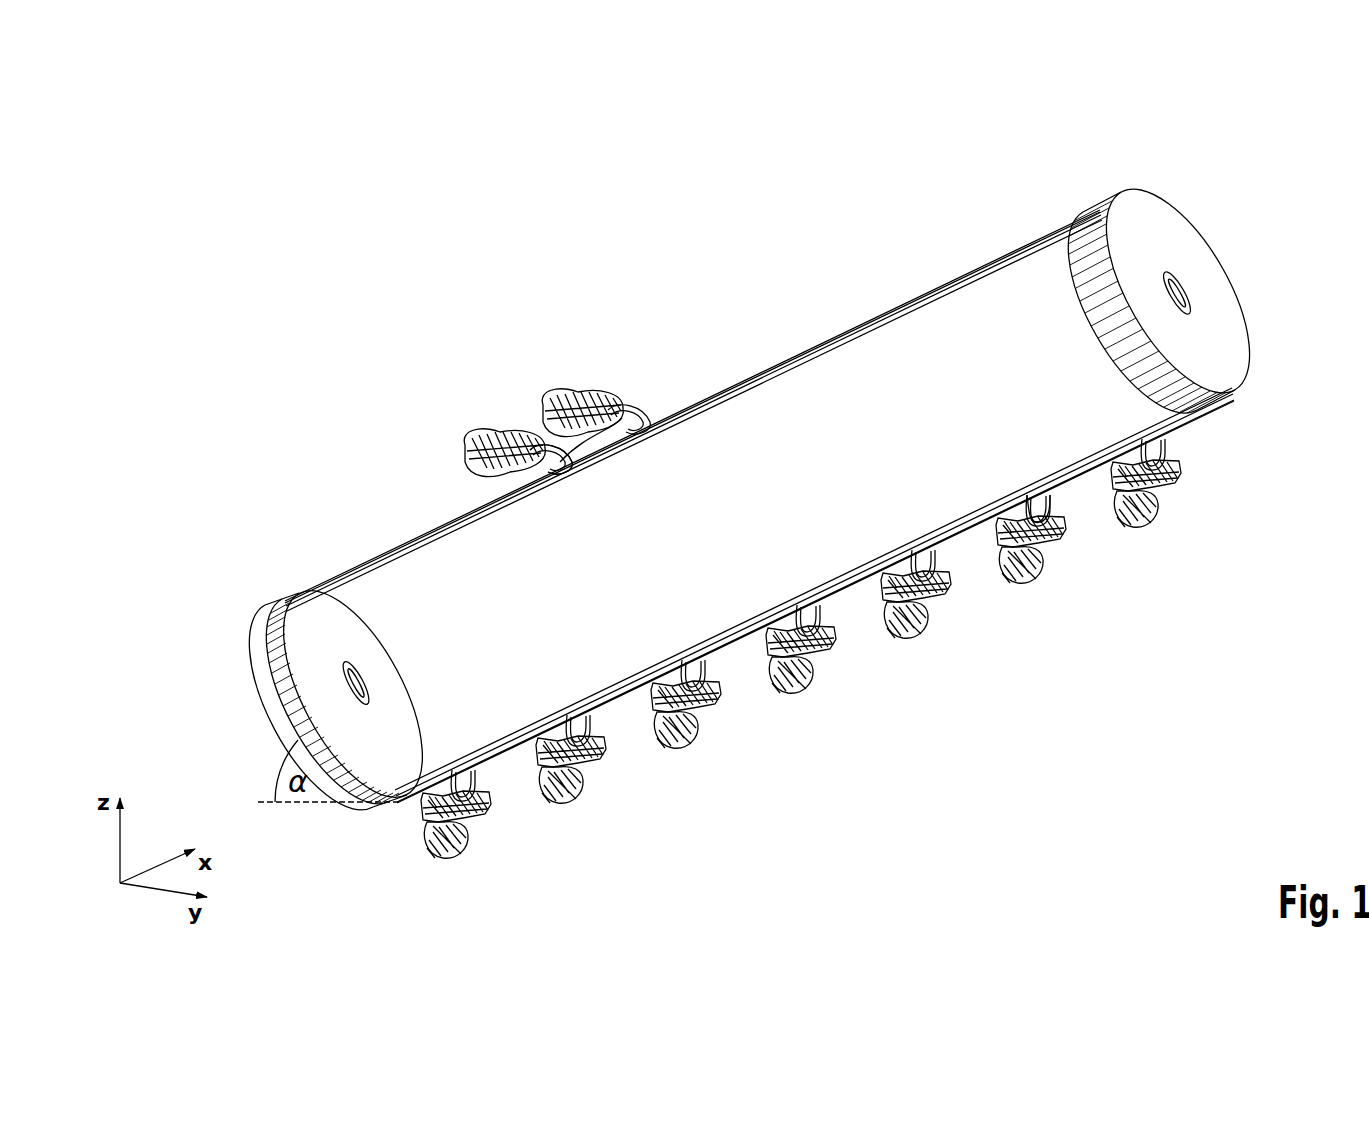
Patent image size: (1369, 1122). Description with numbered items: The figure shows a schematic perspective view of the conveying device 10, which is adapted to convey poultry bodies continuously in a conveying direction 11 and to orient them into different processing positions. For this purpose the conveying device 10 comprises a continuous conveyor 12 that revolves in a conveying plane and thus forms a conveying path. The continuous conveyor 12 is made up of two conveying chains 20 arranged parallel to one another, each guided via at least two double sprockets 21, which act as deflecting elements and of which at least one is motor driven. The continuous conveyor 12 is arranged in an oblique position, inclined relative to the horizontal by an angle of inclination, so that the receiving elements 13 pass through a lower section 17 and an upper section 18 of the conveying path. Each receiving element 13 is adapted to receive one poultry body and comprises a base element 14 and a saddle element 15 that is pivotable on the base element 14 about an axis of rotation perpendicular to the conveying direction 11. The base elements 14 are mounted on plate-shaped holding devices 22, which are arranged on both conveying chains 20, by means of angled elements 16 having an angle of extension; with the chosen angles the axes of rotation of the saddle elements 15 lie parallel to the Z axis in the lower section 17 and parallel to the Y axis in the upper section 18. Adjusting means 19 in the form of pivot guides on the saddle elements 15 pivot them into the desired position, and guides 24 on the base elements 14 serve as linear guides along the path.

The conveying device 10 is at (880, 212).
The conveying direction 11 is at (603, 210).
The continuous conveyor 12 is at (1073, 210).
The receiving element 13 is at (465, 855).
The base element 14 is at (489, 806).
The saddle element 15 is at (700, 737).
The angled element 16 is at (617, 412).
The lower section 17 is at (1213, 434).
The upper section 18 is at (246, 592).
The adjusting means 19 is at (597, 385).
The conveying chain 20 is at (735, 373).
The double sprocket 21 is at (1160, 232).
The holding device 22 is at (568, 470).
The guide 24 is at (828, 640).